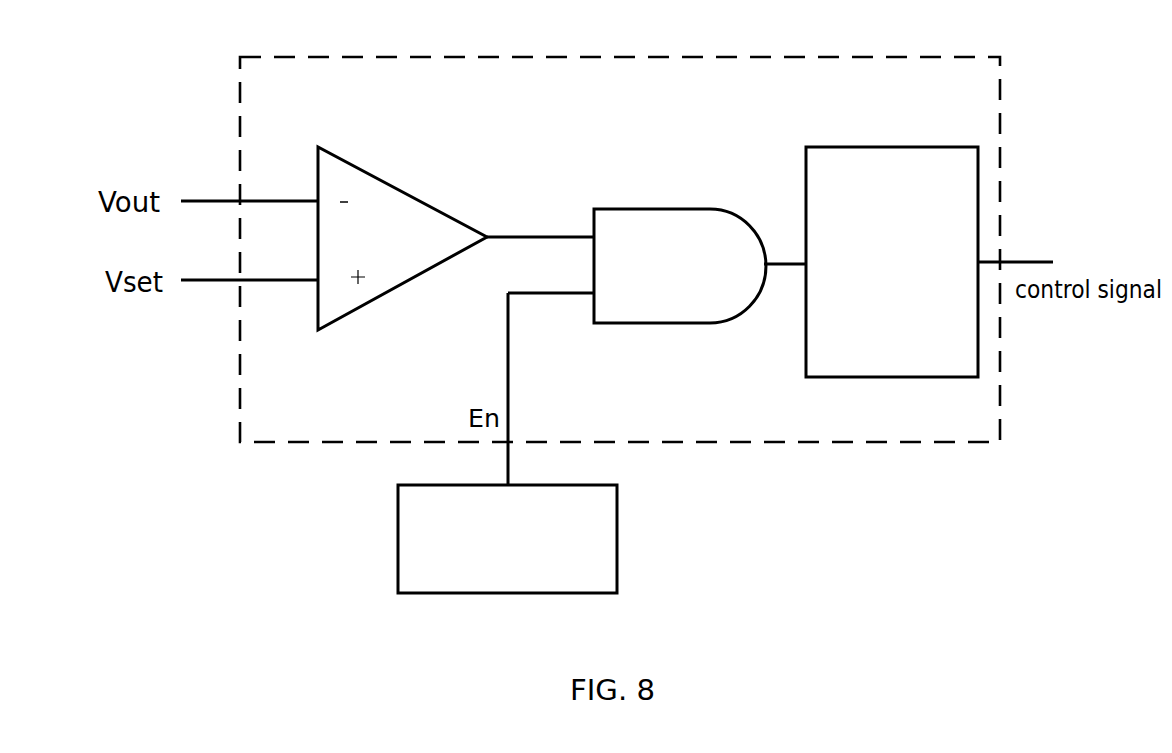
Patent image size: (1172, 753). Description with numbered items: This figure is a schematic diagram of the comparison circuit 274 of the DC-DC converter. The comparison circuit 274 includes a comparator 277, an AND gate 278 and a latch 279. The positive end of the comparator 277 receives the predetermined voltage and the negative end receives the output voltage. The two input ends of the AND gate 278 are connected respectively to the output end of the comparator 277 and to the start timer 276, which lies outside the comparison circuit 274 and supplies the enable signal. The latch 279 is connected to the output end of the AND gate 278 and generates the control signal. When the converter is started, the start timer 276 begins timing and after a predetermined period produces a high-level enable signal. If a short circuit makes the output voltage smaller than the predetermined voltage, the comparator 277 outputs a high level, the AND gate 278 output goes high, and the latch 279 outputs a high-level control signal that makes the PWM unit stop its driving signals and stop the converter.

The comparison circuit 274 is at (763, 58).
The start timer 276 is at (603, 490).
The comparator 277 is at (402, 198).
The AND gate 278 is at (620, 213).
The latch 279 is at (843, 152).